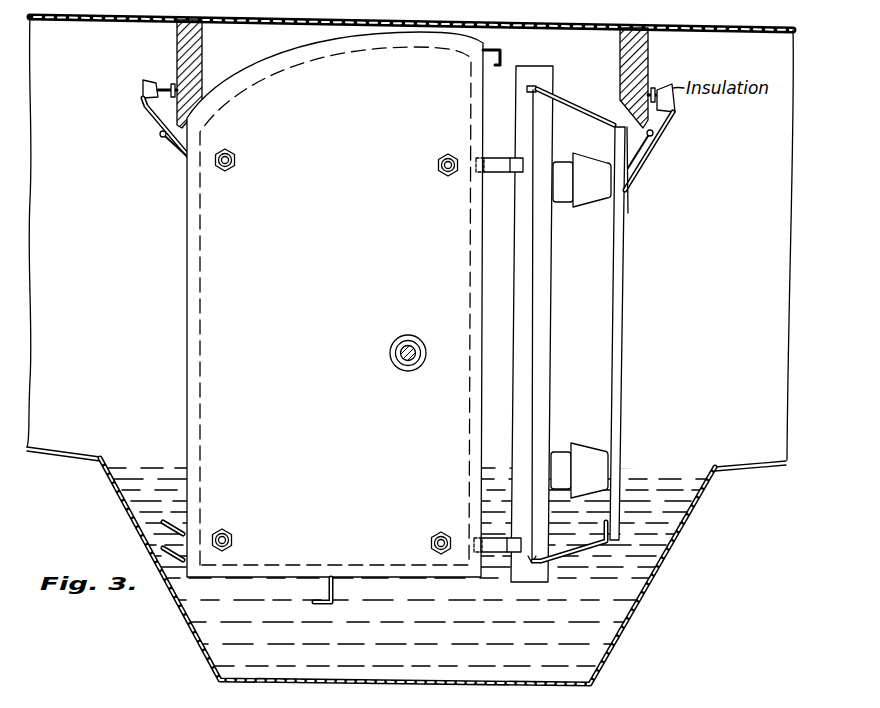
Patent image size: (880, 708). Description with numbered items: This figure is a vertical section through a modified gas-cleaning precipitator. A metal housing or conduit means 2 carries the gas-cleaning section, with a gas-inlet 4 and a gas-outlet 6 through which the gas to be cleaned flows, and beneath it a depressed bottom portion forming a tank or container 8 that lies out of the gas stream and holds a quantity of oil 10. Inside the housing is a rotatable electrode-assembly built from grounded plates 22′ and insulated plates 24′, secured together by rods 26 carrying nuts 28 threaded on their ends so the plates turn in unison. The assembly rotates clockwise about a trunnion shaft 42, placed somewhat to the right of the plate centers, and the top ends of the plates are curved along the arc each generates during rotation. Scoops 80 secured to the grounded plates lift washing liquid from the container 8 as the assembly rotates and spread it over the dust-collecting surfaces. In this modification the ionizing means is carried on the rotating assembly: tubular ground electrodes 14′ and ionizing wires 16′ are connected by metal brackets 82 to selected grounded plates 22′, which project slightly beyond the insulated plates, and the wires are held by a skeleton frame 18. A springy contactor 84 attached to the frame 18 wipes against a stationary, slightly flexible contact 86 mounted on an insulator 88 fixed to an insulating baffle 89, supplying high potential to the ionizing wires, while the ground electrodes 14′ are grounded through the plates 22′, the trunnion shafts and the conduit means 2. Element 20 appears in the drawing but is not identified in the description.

The housing or conduit means 2 is at (560, 28).
The gas-inlet 4 is at (788, 456).
The gas-outlet 6 is at (34, 339).
The tank or container 8 is at (640, 600).
The oil 10 is at (674, 537).
The ground electrodes 14′ is at (552, 352).
The ionizing wires 16′ is at (533, 388).
The skeleton frame 18 is at (626, 292).
The bumper 20 is at (592, 205).
The grounded plates 22′ is at (187, 293).
The insulated plates 24′ is at (200, 341).
The rods 26 is at (230, 153).
The nuts 28 is at (236, 158).
The trunnion shaft 42 is at (403, 362).
The scoops 80 is at (184, 528).
The metal brackets 82 is at (500, 172).
The springy contactor 84 is at (646, 166).
The stationary slightly flexible contact 86 is at (677, 110).
The insulator 88 is at (657, 88).
The insulating baffle 89 is at (649, 48).